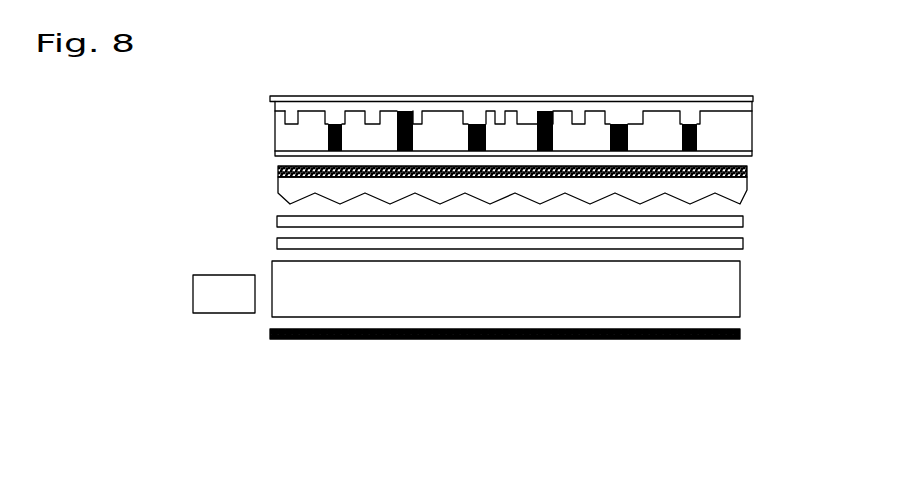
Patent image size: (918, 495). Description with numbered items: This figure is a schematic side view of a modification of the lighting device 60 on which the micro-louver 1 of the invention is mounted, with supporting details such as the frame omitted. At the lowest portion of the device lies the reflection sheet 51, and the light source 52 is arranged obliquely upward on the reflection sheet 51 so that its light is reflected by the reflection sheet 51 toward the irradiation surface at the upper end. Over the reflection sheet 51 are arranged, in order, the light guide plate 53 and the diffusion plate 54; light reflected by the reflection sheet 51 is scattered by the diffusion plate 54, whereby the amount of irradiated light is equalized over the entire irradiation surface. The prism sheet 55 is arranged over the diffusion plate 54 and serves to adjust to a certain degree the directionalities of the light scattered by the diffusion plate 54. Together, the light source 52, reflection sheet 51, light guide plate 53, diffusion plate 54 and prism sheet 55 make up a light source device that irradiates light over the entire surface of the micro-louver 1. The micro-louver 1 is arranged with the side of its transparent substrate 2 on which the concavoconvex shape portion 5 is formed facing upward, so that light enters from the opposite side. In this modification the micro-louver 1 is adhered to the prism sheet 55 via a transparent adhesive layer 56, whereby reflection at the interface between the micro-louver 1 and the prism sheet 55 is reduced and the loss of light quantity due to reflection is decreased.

The micro-louver 1 is at (743, 132).
The transparent substrate 2 is at (271, 100).
The concavoconvex shape portion 5 is at (285, 119).
The reflection sheet 51 is at (740, 334).
The light source 52 is at (220, 288).
The light guide plate 53 is at (740, 295).
The diffusion plate 54 is at (743, 243).
The prism sheet 55 is at (738, 192).
The transparent adhesive layer 56 is at (747, 173).
The lighting device 60 is at (775, 368).